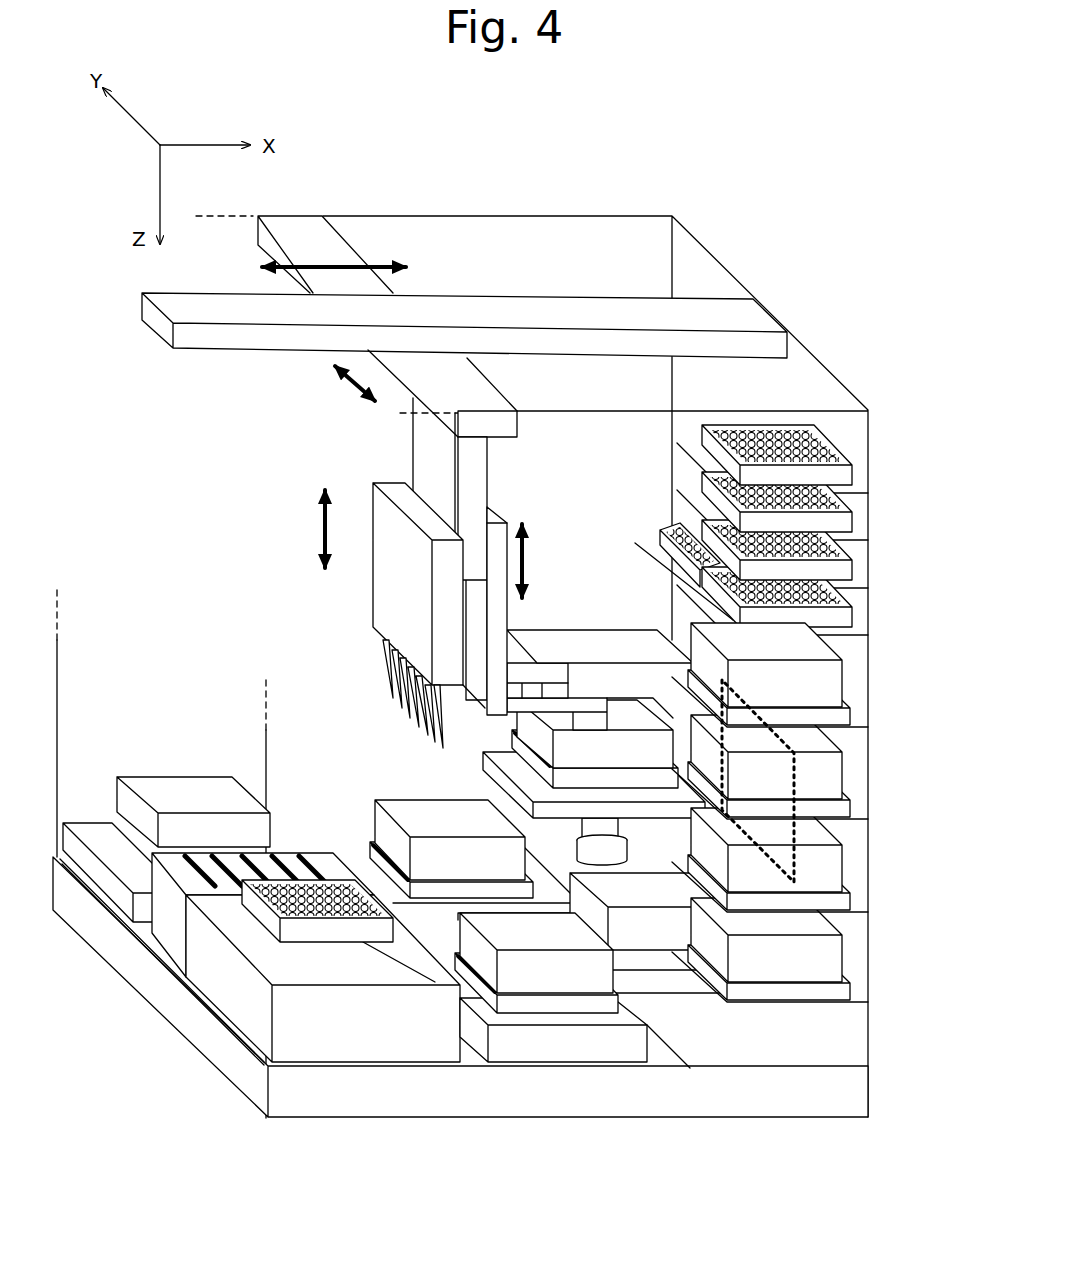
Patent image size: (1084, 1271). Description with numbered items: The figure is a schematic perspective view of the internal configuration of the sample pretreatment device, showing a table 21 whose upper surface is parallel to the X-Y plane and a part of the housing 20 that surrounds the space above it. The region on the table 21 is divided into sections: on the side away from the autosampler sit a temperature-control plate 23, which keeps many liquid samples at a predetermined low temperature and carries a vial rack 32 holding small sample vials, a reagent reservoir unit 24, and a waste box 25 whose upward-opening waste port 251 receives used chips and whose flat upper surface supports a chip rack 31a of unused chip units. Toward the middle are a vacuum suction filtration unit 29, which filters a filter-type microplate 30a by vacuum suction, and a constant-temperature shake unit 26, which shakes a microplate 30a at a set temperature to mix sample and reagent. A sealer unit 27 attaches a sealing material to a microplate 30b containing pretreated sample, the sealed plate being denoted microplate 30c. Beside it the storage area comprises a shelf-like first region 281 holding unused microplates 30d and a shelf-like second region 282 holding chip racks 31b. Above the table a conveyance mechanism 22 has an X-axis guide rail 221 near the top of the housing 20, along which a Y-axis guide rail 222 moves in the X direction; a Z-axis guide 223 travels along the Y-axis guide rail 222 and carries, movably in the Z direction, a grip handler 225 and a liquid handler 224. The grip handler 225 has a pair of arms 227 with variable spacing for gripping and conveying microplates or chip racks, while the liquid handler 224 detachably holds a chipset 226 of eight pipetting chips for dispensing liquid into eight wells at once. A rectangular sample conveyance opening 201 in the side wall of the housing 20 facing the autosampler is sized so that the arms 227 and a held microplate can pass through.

The housing 20 is at (848, 387).
The table 21 is at (852, 1062).
The conveyance mechanism 22 is at (439, 482).
The X-axis guide rail 221 is at (495, 297).
The Y-axis guide rail 222 is at (350, 248).
The Z-axis guide 223 is at (481, 466).
The liquid handler 224 is at (372, 545).
The grip handler 225 is at (502, 557).
The chipset 226 is at (372, 664).
The arm 227 is at (550, 703).
The temperature-control plate 23 is at (107, 880).
The reagent reservoir unit 24 is at (170, 938).
The waste box 25 is at (323, 1029).
The waste port 251 is at (407, 975).
The constant-temperature shake unit 26 is at (582, 1053).
The sealer unit 27 is at (712, 704).
The first region 281 is at (809, 812).
The second region 282 is at (798, 528).
The vacuum suction filtration unit 29 is at (350, 852).
The microplate 30a is at (536, 965).
The microplate 30b is at (660, 743).
The microplate 30c is at (723, 727).
The unused microplate 30d is at (835, 955).
The chip rack 31a is at (257, 917).
The chip rack 31b is at (881, 637).
The vial rack 32 is at (172, 778).
The sample conveyance opening 201 is at (832, 781).